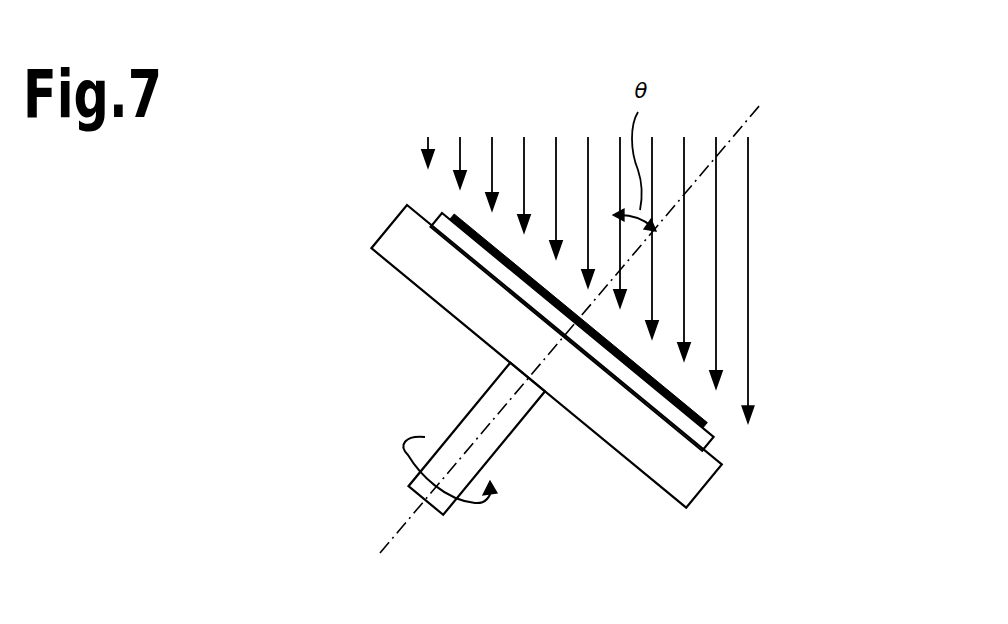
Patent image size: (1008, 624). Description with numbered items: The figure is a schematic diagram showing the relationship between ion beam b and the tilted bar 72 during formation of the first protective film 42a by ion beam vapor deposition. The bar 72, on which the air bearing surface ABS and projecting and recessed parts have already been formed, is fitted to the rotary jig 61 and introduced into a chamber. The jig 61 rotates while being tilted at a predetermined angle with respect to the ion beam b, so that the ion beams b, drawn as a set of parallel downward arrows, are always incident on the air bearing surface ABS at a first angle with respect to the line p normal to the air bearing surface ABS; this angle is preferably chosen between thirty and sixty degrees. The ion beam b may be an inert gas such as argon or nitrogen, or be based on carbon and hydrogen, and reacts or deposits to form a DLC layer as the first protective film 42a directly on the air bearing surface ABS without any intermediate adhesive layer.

The first protective film 42a is at (694, 412).
The bar 72 is at (708, 443).
The rotary jig 61 is at (698, 493).
The air bearing surface ABS is at (447, 217).
The ion beam b is at (750, 231).
The line normal to the air bearing surface p is at (744, 128).